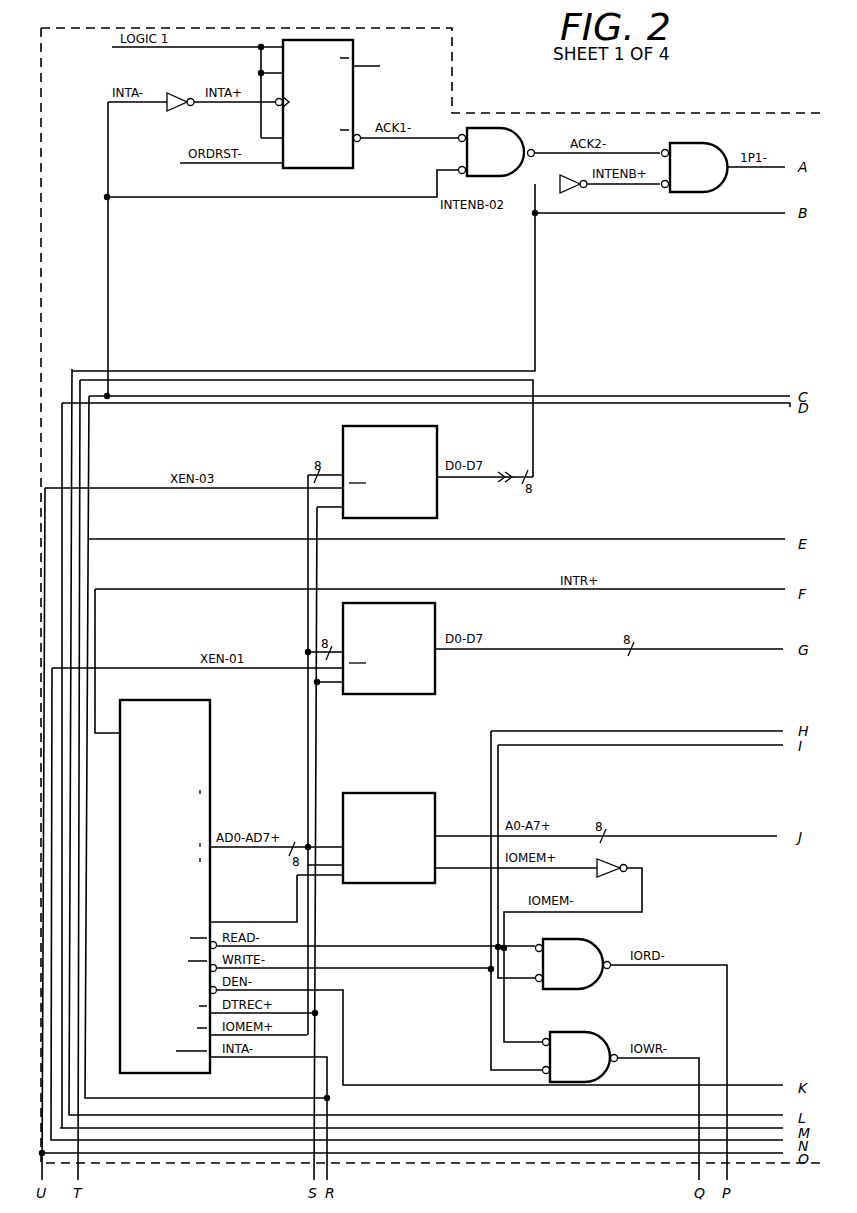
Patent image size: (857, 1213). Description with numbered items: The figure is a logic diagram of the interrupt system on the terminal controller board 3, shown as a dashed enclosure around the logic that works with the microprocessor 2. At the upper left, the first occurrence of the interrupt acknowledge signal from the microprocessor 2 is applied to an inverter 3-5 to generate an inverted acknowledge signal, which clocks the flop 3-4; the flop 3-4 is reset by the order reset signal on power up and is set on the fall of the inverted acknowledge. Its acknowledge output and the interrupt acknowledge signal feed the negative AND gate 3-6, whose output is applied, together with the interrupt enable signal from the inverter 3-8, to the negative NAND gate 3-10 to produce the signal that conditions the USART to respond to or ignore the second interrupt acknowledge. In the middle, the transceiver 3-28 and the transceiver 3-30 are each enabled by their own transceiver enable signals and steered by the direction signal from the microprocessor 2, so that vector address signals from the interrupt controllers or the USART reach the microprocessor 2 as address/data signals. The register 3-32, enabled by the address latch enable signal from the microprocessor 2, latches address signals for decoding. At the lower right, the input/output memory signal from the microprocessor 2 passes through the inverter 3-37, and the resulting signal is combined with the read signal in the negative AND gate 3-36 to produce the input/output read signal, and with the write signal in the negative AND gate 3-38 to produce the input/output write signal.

The terminal controller board (ATC) 3 is at (82, 28).
The microprocessor 2 is at (200, 700).
The flop 3-4 is at (334, 40).
The inverter 3-5 is at (190, 85).
The negative AND gate 3-6 is at (498, 128).
The inverter 3-8 is at (576, 190).
The negative NAND gate 3-10 is at (702, 143).
The XCVR 3-28 is at (437, 449).
The transceiver 3-30 is at (435, 627).
The register 3-32 is at (387, 793).
The negative AND gate 3-36 is at (590, 939).
The inverter 3-37 is at (614, 862).
The negative AND gate 3-38 is at (592, 1032).